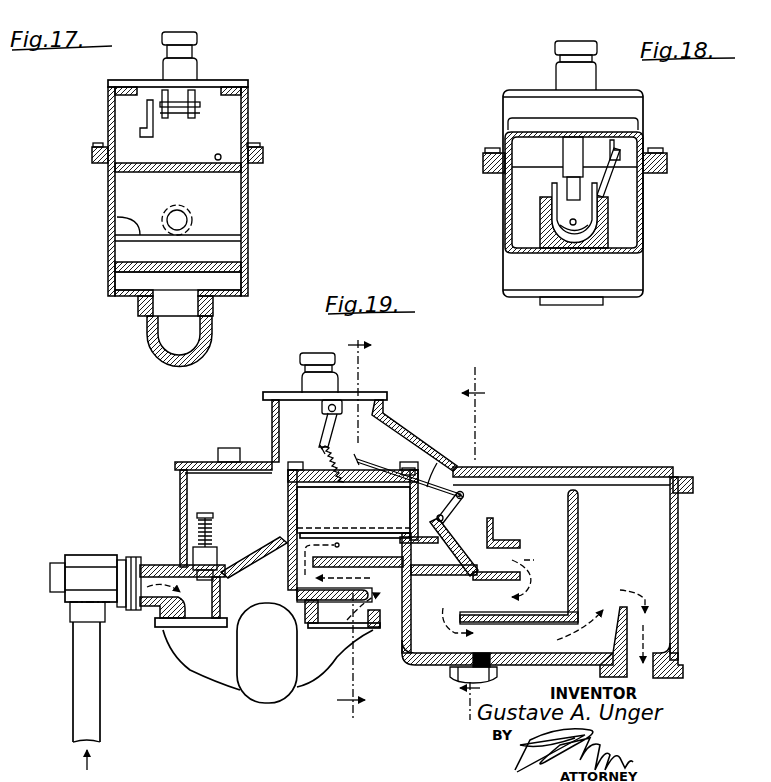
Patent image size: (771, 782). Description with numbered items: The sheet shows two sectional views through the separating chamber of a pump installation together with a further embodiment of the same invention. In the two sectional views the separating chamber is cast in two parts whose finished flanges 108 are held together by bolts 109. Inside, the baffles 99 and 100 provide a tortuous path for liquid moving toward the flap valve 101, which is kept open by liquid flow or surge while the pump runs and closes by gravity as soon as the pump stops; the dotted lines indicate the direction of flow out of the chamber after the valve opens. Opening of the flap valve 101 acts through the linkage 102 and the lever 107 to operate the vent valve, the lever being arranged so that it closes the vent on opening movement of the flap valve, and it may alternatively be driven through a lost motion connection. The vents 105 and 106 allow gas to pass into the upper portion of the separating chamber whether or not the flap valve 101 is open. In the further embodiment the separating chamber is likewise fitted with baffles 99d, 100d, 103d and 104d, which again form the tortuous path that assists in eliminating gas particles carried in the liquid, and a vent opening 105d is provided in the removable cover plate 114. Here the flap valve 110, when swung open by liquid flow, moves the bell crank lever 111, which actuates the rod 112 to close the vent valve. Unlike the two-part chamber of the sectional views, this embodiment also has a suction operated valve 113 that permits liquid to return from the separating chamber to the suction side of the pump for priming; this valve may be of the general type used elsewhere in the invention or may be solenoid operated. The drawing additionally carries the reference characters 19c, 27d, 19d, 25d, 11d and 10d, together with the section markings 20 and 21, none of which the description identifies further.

In FIG. 17, the adjusting cap 19c is at (180, 62).
In FIG. 18, the adjusting cap 19c is at (583, 77).
In FIG. 17, the lever 107 is at (148, 115).
In FIG. 18, the lever 107 is at (622, 146).
In FIG. 17, the bolts 109 is at (100, 147).
In FIG. 18, the bolts 109 is at (490, 150).
In FIG. 17, the vent 105 is at (177, 165).
In FIG. 17, the flanges 108 is at (263, 163).
In FIG. 18, the flanges 108 is at (483, 173).
In FIG. 17, the baffle 100 is at (125, 221).
In FIG. 17, the flap valve 101 is at (192, 213).
In FIG. 18, the flap valve 101 is at (573, 237).
In FIG. 17, the baffle 99 is at (133, 270).
In FIG. 18, the linkage 102 is at (603, 182).
In FIG. 18, the vent 106 is at (577, 223).
In FIG. 19, the cap 27d is at (328, 306).
In FIG. 19, the adjusting knob 19d is at (315, 380).
In FIG. 19, the spring lever 25d is at (310, 405).
In FIG. 19, the rod 112 is at (378, 462).
In FIG. 19, the section line 20- 20 is at (352, 523).
In FIG. 19, the section line 21- 21 is at (474, 543).
In FIG. 19, the suction operated valve 113 is at (207, 558).
In FIG. 19, the vent opening 105d is at (325, 478).
In FIG. 19, the removable cover plate 114 is at (372, 480).
In FIG. 19, the bell crank lever 111 is at (465, 504).
In FIG. 19, the flap valve 110 is at (468, 560).
In FIG. 19, the baffle 100d is at (367, 568).
In FIG. 19, the baffle 103d is at (487, 582).
In FIG. 19, the baffle 104d is at (495, 623).
In FIG. 19, the baffle 99d is at (342, 601).
In FIG. 19, the float 11d is at (267, 653).
In FIG. 19, the inlet pipe 10d is at (90, 688).